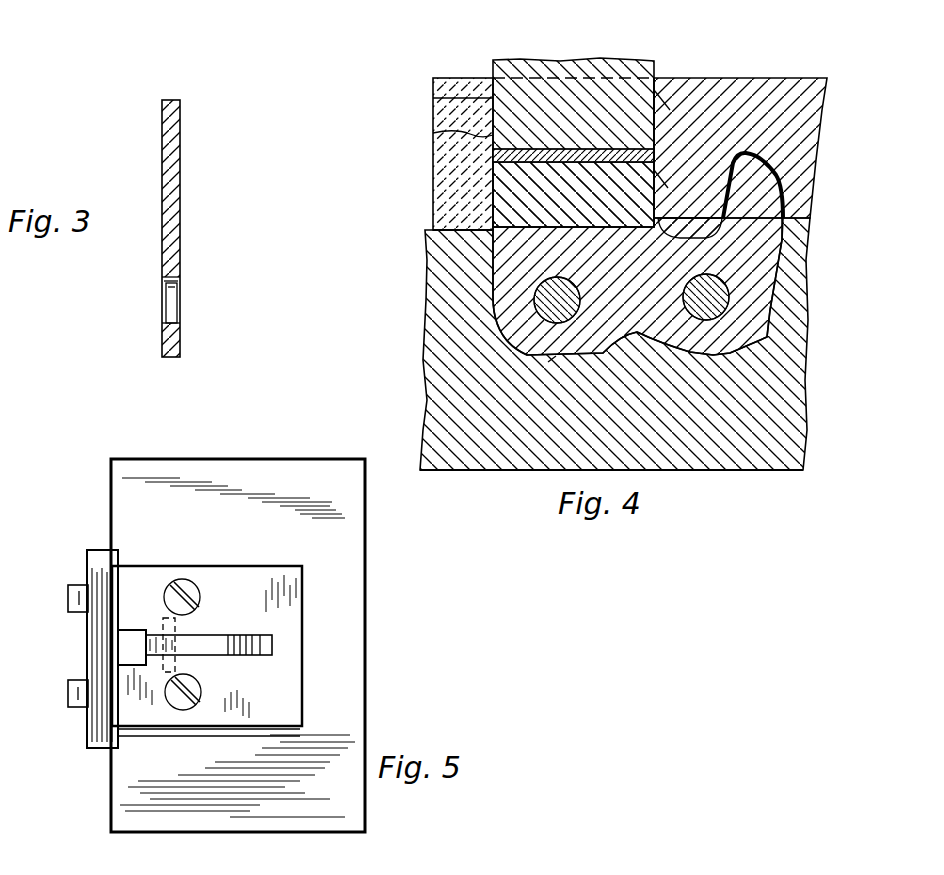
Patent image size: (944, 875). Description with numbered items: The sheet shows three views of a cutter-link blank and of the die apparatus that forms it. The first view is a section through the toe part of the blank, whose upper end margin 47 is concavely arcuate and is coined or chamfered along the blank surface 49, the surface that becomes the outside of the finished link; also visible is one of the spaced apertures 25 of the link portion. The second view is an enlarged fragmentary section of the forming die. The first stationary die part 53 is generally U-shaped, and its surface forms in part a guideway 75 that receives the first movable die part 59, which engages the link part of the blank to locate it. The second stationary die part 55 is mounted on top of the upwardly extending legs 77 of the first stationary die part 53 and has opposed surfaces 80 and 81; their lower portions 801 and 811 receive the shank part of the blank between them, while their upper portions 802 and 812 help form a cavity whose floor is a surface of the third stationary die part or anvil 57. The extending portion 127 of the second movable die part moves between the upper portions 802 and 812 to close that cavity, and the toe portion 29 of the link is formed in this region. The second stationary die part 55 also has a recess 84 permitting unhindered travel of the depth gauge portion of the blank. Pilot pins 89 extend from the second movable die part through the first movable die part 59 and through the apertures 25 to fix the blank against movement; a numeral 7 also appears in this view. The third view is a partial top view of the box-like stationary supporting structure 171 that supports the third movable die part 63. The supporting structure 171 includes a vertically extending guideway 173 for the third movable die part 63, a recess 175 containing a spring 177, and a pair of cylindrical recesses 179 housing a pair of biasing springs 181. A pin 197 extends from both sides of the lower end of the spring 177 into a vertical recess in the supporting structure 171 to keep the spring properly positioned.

In FIG. 3, the upper end margin 47 is at (167, 100).
In FIG. 3, the blank surface 49 is at (162, 240).
In FIG. 3, the apertures 25 is at (165, 293).
In FIG. 4, the third movable die part 63 is at (580, 97).
In FIG. 5, the third movable die part 63 is at (123, 653).
In FIG. 4, the extending portion 127 is at (548, 107).
In FIG. 4, the upper portion of surface 81 812 is at (657, 88).
In FIG. 4, the second stationary die part 55 is at (760, 100).
In FIG. 4, the upper portion of surface 80 802 is at (470, 98).
In FIG. 4, the opposed surface 80 is at (493, 135).
In FIG. 4, the opposed surface 81 is at (655, 103).
In FIG. 4, the toe portion 29 is at (583, 158).
In FIG. 4, the lower portion of surface 81 811 is at (665, 185).
In FIG. 4, the recess 84 is at (783, 190).
In FIG. 4, the third stationary die part 57 is at (520, 197).
In FIG. 4, the lower portion of surface 80 801 is at (490, 215).
In FIG. 4, the upwardly extending legs 77 is at (436, 270).
In FIG. 4, the pilot pins 89 is at (575, 296).
In FIG. 4, the guideway 75 is at (765, 276).
In FIG. 4, the first movable die part 59 is at (505, 307).
In FIG. 4, the device 7 is at (545, 372).
In FIG. 4, the first stationary die part 53 is at (693, 470).
In FIG. 5, the stationary supporting structure 171 is at (303, 588).
In FIG. 5, the guideway 173 is at (133, 622).
In FIG. 5, the recess 175 is at (272, 647).
In FIG. 5, the spring 177 is at (222, 645).
In FIG. 5, the cylindrical recesses 179 is at (200, 593).
In FIG. 5, the biasing springs 181 is at (182, 588).
In FIG. 5, the pin 197 is at (176, 626).